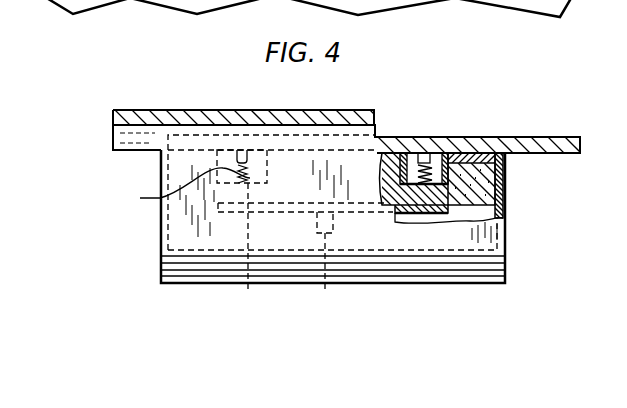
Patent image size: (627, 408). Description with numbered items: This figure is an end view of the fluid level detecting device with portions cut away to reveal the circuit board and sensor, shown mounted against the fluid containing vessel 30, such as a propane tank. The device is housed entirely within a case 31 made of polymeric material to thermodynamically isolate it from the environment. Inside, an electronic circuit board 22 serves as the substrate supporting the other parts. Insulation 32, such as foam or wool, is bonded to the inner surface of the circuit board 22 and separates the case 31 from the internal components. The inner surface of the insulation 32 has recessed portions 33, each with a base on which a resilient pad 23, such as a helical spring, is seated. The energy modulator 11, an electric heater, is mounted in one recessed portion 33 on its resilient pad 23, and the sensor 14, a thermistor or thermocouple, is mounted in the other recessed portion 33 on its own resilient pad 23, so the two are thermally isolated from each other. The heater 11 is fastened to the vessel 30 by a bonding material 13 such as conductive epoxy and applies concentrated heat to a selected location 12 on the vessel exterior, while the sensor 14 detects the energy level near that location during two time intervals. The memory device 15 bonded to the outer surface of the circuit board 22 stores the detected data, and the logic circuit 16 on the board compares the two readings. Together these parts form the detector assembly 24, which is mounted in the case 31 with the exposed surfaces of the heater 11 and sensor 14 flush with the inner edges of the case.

The energy modulator 11 is at (430, 163).
The selected location 12 is at (445, 137).
The bonding material 13 is at (240, 127).
The sensor 14 is at (263, 148).
The memory device 15 is at (305, 259).
The logic circuit 16 is at (250, 249).
The electronic circuit board 22 is at (419, 213).
The resilient pad 23 is at (453, 293).
The detector assembly 24 is at (282, 222).
The fluid containing vessel 30 is at (563, 137).
The case 31 is at (505, 212).
The insulation 32 is at (485, 162).
The recessed portion 33 is at (264, 147).